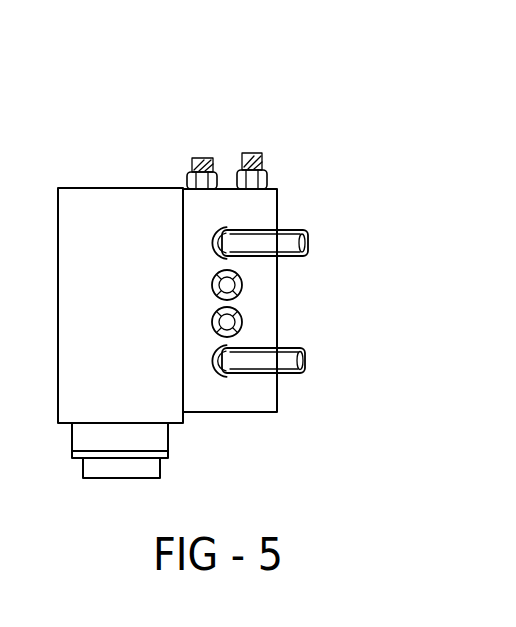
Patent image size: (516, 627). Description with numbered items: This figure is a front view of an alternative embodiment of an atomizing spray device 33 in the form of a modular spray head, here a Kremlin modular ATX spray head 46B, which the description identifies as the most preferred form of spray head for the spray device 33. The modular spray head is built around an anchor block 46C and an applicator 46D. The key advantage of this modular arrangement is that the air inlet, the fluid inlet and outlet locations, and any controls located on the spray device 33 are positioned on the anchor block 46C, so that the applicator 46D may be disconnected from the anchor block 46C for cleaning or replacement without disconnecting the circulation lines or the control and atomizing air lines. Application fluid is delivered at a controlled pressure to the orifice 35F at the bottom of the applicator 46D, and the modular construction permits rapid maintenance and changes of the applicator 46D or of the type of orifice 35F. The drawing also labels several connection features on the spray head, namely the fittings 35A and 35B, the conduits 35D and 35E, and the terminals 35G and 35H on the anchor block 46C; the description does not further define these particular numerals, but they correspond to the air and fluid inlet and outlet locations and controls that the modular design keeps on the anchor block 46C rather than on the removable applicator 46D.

The spray device 33 is at (277, 205).
The first port 35A is at (242, 288).
The second port 35B is at (242, 323).
The upper fluid conduit 35D is at (285, 230).
The lower fluid conduit 35E is at (289, 377).
The orifice 35F is at (140, 478).
The second electrical terminal 35G is at (245, 152).
The first electrical terminal 35H is at (190, 160).
The Kremlin modular ATX spray head 46B is at (274, 156).
The anchor block 46C is at (213, 212).
The applicator 46D is at (70, 205).